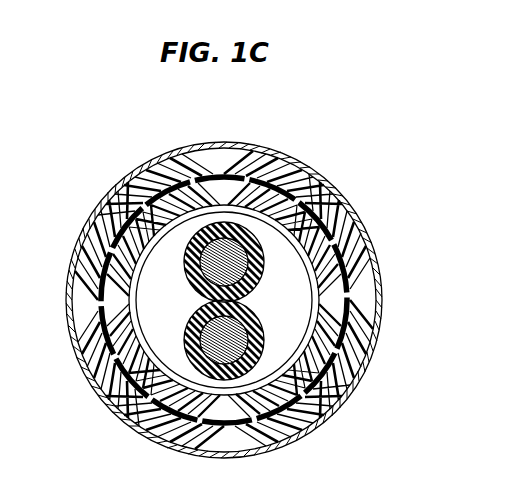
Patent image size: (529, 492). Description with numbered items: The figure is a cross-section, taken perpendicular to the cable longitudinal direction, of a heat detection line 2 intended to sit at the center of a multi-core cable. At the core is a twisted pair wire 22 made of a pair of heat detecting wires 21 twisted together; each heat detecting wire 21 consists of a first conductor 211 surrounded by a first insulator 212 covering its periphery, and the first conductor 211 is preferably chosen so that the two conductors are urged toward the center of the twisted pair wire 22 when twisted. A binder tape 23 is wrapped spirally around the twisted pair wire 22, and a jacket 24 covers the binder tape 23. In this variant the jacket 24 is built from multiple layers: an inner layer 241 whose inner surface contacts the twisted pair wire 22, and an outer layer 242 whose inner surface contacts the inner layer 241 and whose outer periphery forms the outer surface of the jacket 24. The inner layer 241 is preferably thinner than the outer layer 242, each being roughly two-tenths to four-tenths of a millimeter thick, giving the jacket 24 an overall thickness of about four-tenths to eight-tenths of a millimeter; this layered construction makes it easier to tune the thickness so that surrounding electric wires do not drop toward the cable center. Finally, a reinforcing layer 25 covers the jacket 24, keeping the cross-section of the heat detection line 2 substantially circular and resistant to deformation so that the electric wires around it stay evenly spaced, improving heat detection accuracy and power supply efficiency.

The heat detection line 2 is at (98, 137).
The heat detecting wire 21 is at (223, 261).
The first conductor 211 is at (230, 246).
The first insulator 212 is at (258, 240).
The twisted pair wire 22 is at (280, 291).
The binder tape 23 is at (328, 316).
The jacket 24 is at (274, 300).
The inner layer 241 is at (337, 350).
The outer layer 242 is at (333, 380).
The reinforcing layer 25 is at (337, 413).